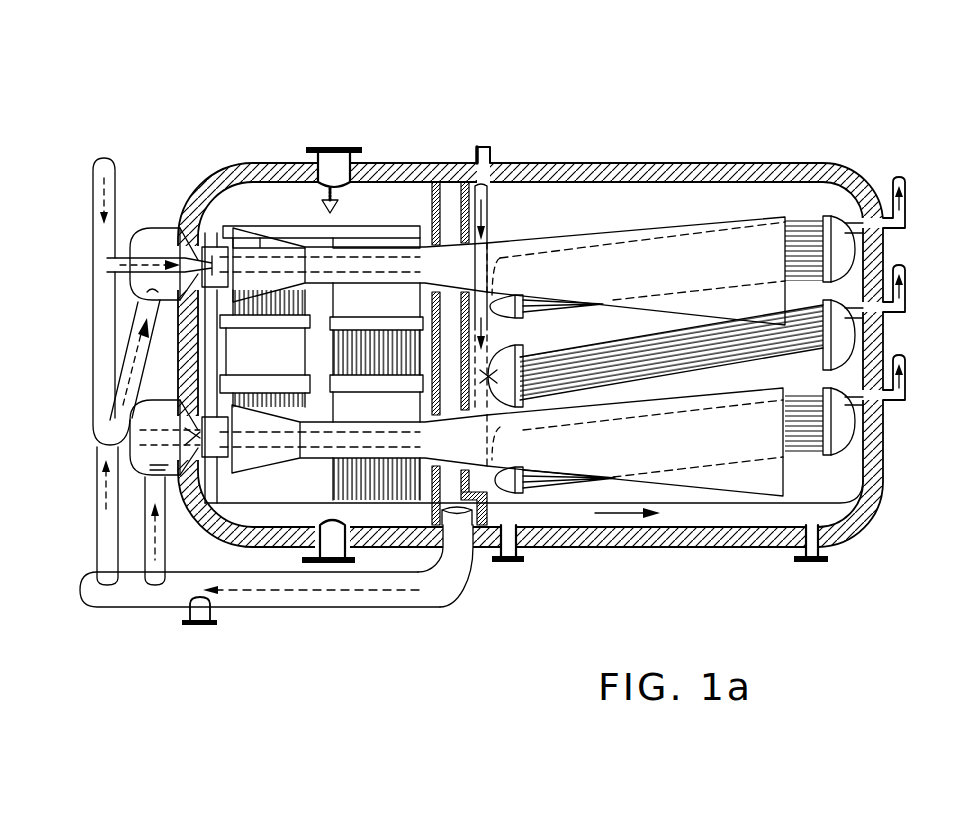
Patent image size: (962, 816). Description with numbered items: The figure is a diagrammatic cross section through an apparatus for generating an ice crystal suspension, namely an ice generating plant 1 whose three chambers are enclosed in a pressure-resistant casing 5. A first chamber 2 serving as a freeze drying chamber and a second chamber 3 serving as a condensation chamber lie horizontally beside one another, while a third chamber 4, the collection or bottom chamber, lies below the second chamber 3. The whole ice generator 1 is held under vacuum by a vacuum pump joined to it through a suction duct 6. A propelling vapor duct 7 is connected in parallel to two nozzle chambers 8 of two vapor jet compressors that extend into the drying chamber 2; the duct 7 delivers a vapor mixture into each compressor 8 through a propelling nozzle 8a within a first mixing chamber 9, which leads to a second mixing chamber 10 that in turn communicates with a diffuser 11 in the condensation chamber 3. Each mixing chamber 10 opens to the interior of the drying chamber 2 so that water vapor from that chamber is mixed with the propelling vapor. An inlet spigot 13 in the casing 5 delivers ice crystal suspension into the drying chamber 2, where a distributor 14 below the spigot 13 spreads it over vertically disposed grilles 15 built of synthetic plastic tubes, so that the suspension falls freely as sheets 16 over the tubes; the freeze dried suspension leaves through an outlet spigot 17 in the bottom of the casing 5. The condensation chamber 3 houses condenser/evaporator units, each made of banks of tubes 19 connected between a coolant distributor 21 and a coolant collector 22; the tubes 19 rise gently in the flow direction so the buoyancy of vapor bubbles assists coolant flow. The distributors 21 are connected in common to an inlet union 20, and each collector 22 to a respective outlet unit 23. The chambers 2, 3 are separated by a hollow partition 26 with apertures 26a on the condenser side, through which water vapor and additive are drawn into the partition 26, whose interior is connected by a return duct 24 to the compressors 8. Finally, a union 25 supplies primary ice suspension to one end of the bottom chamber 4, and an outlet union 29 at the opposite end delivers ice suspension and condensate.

The ice generating plant 1 is at (734, 148).
The first chamber 2 is at (255, 181).
The second chamber 3 is at (618, 194).
The third chamber 4 is at (690, 523).
The pressure-resistant casing 5 is at (790, 170).
The suction duct 6 is at (190, 610).
The propelling vapor duct 7 is at (113, 158).
The nozzle chamber 8 is at (148, 236).
The propelling nozzle 8a is at (185, 236).
The first mixing chamber 9 is at (213, 305).
The second mixing chamber 10 is at (262, 243).
The diffuser 11 is at (660, 256).
The inlet spigot 13 is at (362, 156).
The distributor 14 is at (383, 232).
The grilles 15 is at (375, 324).
The sheets 16 is at (258, 361).
The outlet spigot 17 is at (356, 549).
The tubes 19 is at (803, 448).
The inlet union 20 is at (491, 152).
The coolant distributor 21 is at (500, 306).
The coolant collector 22 is at (880, 307).
The outlet unit 23 is at (896, 175).
The return duct 24 is at (320, 593).
The union 25 is at (525, 552).
The hollow partition 26 is at (477, 500).
The apertures 26a is at (453, 181).
The outlet union 29 is at (800, 549).